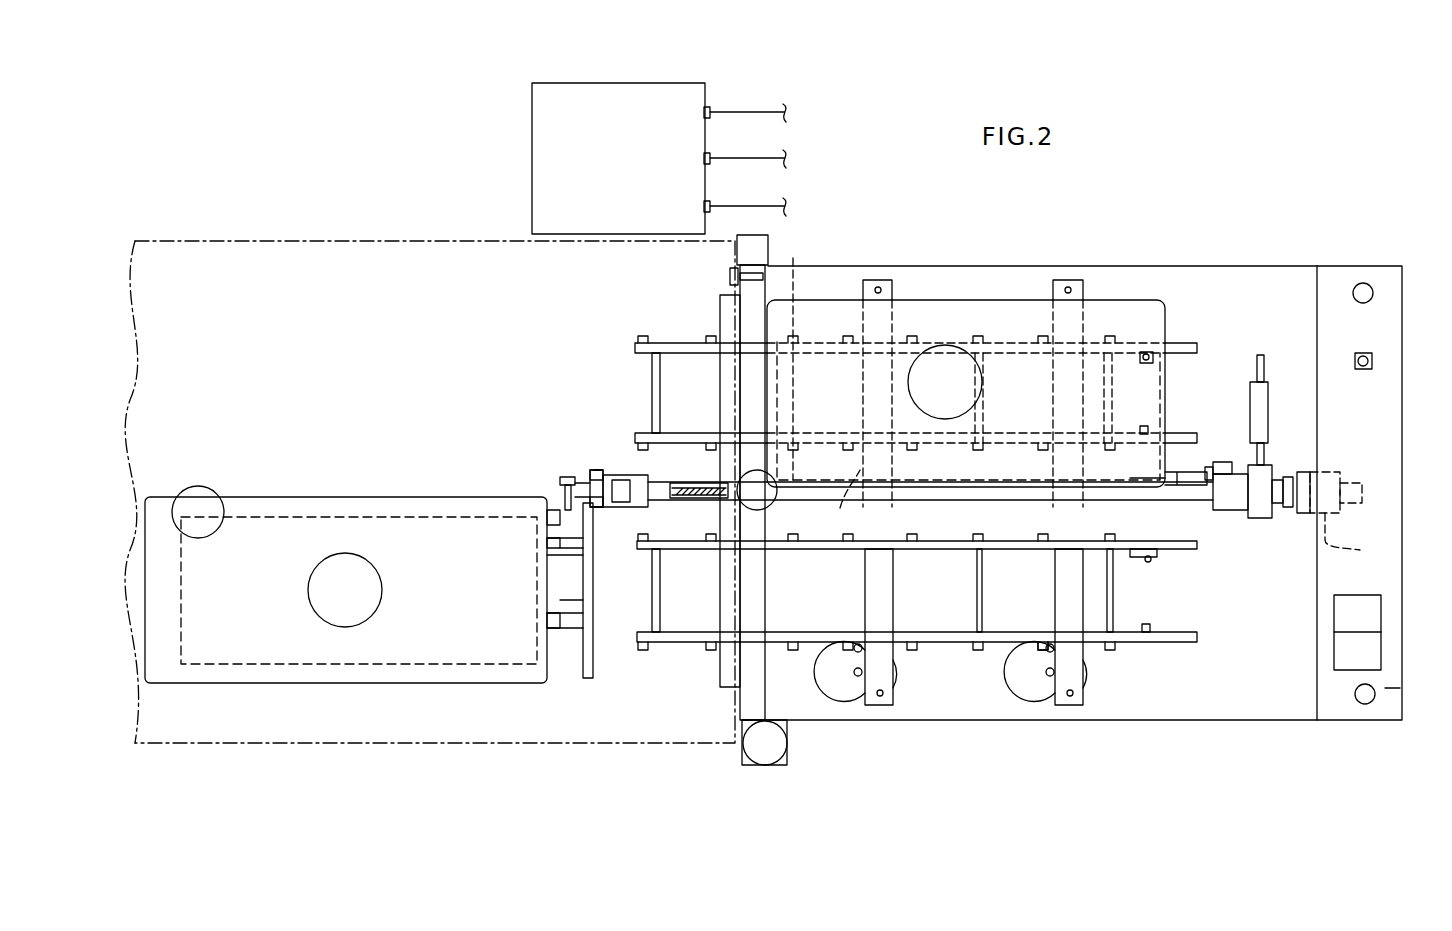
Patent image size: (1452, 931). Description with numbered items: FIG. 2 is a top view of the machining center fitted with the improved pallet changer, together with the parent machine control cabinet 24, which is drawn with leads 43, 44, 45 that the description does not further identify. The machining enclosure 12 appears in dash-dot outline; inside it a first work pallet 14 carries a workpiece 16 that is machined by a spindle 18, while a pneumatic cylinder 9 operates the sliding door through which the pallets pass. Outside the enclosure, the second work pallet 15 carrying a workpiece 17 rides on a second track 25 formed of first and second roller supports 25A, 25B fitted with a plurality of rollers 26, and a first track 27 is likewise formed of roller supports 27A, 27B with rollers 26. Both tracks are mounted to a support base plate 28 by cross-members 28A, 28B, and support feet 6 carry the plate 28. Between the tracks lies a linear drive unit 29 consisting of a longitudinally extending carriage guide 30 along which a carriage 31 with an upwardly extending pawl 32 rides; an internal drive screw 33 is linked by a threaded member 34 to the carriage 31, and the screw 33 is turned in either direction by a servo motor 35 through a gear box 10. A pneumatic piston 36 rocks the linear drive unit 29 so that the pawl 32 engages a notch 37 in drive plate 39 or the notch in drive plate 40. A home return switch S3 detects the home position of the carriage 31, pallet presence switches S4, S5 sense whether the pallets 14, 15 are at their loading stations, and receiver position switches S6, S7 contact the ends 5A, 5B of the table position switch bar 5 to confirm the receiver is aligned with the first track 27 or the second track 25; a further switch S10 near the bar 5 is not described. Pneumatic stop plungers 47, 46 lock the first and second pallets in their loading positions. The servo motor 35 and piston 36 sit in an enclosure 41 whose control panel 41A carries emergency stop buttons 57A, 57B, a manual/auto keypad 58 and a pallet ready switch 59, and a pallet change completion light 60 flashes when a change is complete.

The machining enclosure 12 is at (430, 266).
The parent machine control cabinet 24 is at (585, 72).
The signal line 43 is at (704, 111).
The signal line 44 is at (704, 157).
The signal line 45 is at (704, 206).
The table position switch bar 5 is at (730, 272).
The sensor S10 is at (738, 272).
The switch bar end 5A is at (588, 668).
The switch bar end 5B is at (580, 565).
The first work pallet 14 is at (495, 668).
The spindle 18 is at (200, 512).
The workpiece 16 is at (340, 585).
The drive plate 40 is at (560, 490).
The pawl 32 is at (590, 480).
The carriage 31 is at (604, 464).
The receiver second position switch S7 is at (598, 470).
The receiver first position switch S6 is at (597, 510).
The linear drive unit 29 is at (1118, 510).
The drive screw 33 is at (705, 498).
The pneumatic cylinder 9 is at (775, 490).
The threaded member 34 is at (685, 433).
The second work pallet 15 is at (1000, 300).
The workpiece 17 is at (945, 382).
The first roller support 25A is at (893, 300).
The second track 25 is at (1064, 333).
The second roller support 25B is at (832, 503).
The rollers 26 is at (793, 340).
The second pallet stop plunger 46 is at (1142, 352).
The emergency stop button 57A is at (1372, 292).
The pallet ready switch 59 is at (1373, 360).
The pneumatic piston 36 is at (1260, 408).
The gear box 10 is at (1260, 518).
The home return switch S3 is at (1220, 462).
The notch 37 is at (1193, 472).
The second pallet presence switch S5 is at (1143, 426).
The drive plate 39 is at (1130, 478).
The servo motor 35 is at (1344, 530).
The first roller support 27A is at (1012, 543).
The first track 27 is at (1147, 652).
The second roller support 27B is at (1040, 651).
The carriage guide 30 is at (660, 505).
The first pallet presence switch S4 is at (1142, 627).
The first pallet stop plunger 47 is at (1148, 562).
The cross-member 28A is at (880, 705).
The cross-member 28B is at (1070, 705).
The support feet 6 is at (1070, 683).
The support base plate 28 is at (1190, 700).
The enclosure 41 is at (1318, 730).
The pallet change completion light 60 is at (765, 757).
The manual/auto function display keypad 58 is at (1347, 648).
The emergency stop button 57B is at (1366, 705).
The control panel 41A is at (1385, 688).